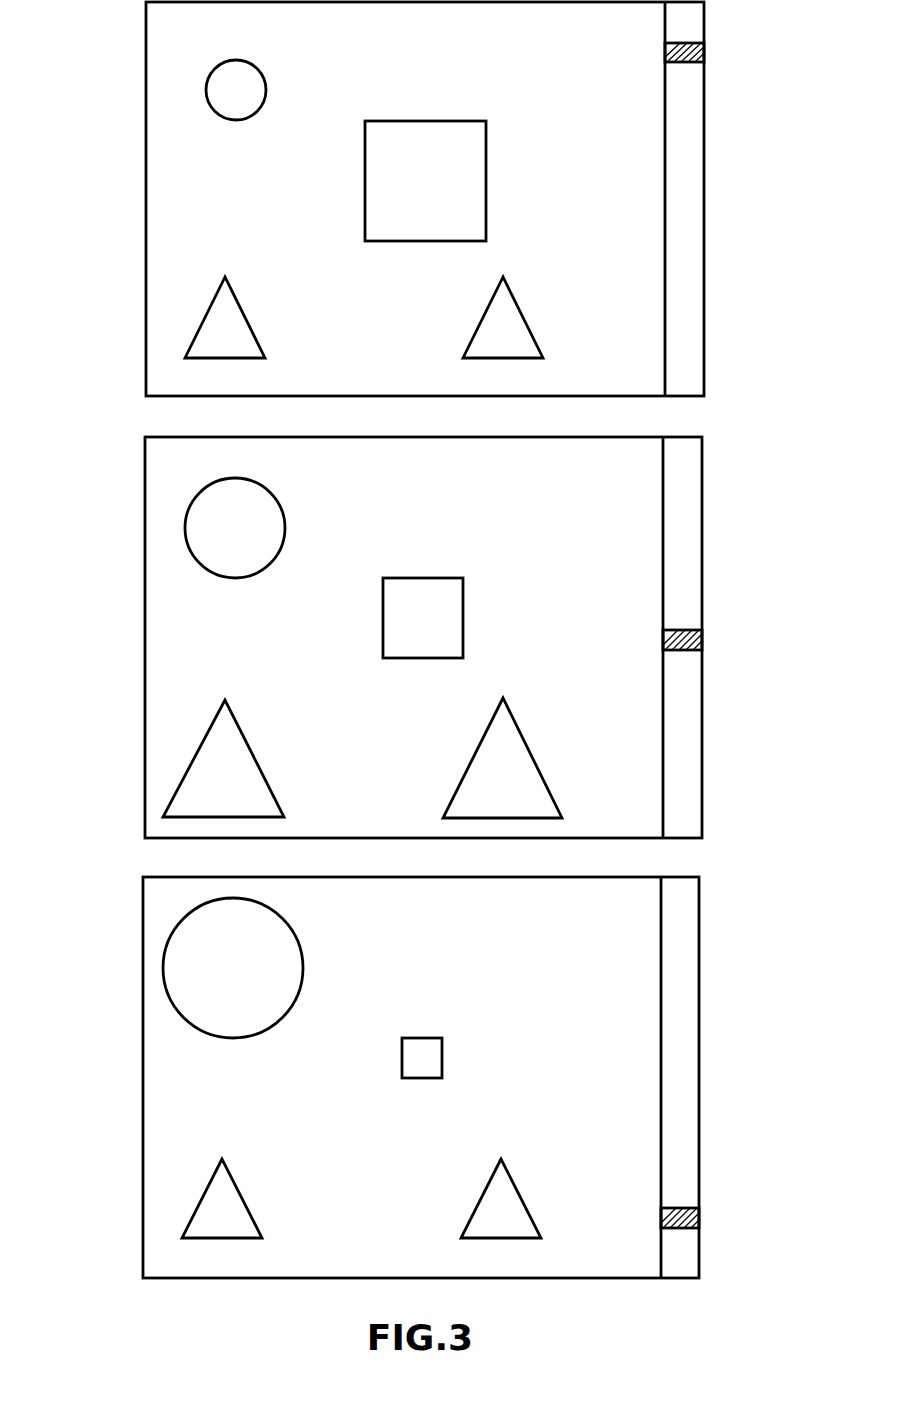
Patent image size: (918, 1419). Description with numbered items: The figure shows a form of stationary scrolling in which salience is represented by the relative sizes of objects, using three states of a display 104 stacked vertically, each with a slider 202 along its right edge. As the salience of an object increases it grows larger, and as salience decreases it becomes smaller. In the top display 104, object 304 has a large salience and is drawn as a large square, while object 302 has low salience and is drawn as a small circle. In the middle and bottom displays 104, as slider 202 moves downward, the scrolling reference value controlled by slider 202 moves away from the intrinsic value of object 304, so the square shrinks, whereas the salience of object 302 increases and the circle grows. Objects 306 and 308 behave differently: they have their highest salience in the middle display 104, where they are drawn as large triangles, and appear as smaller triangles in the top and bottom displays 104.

The display 104 is at (146, 23).
The slider 202 is at (704, 52).
The object 302 is at (243, 62).
The object 304 is at (486, 121).
The object 306 is at (225, 277).
The object 308 is at (503, 277).